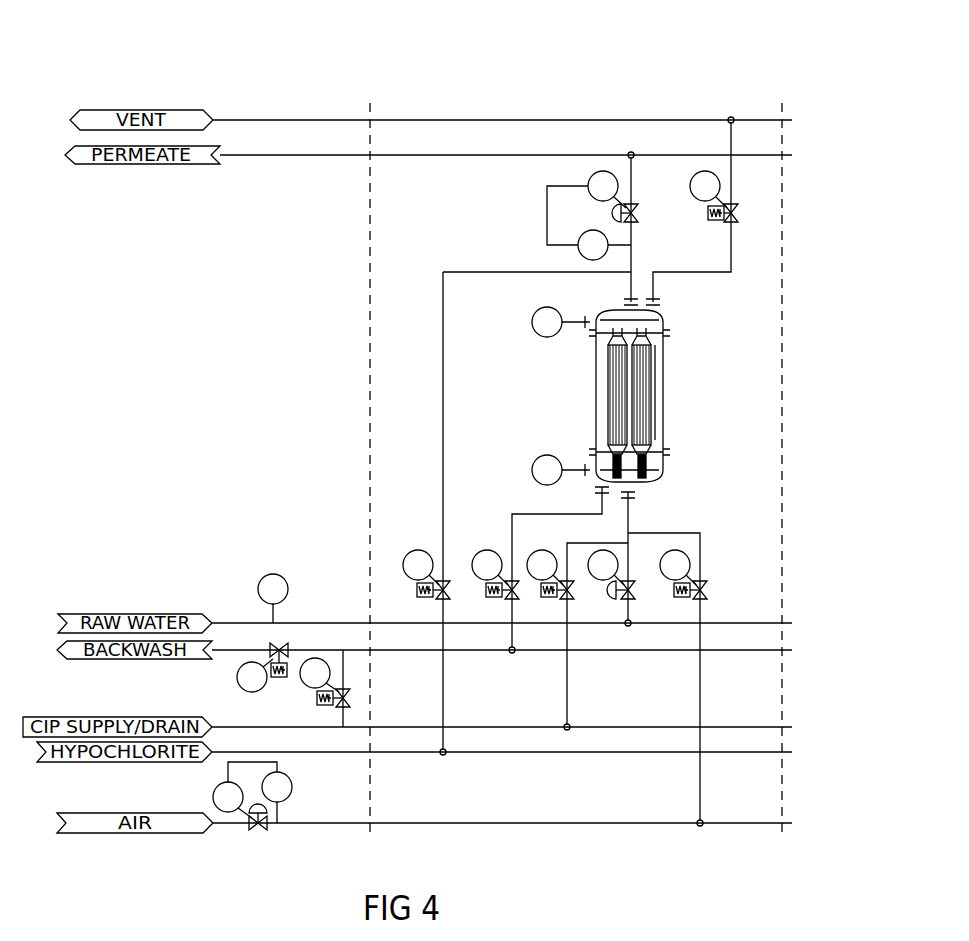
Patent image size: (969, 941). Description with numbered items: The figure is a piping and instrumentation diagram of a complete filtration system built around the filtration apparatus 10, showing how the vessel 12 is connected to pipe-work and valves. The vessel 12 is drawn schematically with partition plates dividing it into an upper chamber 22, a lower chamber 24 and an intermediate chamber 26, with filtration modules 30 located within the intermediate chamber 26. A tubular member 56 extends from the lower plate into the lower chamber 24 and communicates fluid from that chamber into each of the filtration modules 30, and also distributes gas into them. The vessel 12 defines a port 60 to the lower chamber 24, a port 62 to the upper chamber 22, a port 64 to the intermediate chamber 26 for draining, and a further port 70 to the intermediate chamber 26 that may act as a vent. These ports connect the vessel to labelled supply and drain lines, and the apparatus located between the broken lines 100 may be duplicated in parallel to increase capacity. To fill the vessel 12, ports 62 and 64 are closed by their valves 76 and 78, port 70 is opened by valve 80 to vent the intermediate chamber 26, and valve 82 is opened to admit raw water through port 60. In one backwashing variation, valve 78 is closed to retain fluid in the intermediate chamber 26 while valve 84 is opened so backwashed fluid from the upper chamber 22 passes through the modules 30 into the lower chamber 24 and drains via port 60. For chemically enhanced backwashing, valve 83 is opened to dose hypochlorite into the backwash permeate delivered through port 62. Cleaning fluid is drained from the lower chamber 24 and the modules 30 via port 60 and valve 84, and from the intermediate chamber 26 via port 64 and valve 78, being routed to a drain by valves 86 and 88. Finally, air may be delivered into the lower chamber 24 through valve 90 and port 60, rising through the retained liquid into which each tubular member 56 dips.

The filtration apparatus 10 is at (530, 347).
The vessel 12 is at (664, 375).
The upper chamber 22 is at (660, 322).
The lower chamber 24 is at (652, 461).
The intermediate chamber 26 is at (655, 410).
The filtration modules 30 is at (613, 384).
The tubular member 56 is at (616, 466).
The port 60 is at (640, 493).
The port 62 is at (626, 305).
The port 64 is at (596, 486).
The port 70 is at (658, 303).
The valve 76 is at (638, 214).
The valve 78 is at (508, 598).
The valve 80 is at (738, 214).
The valve 82 is at (623, 598).
The valve 83 is at (440, 598).
The valve 84 is at (563, 598).
The valve 86 is at (279, 650).
The valve 88 is at (351, 700).
The valve 90 is at (697, 598).
The broken lines 100 is at (370, 103).